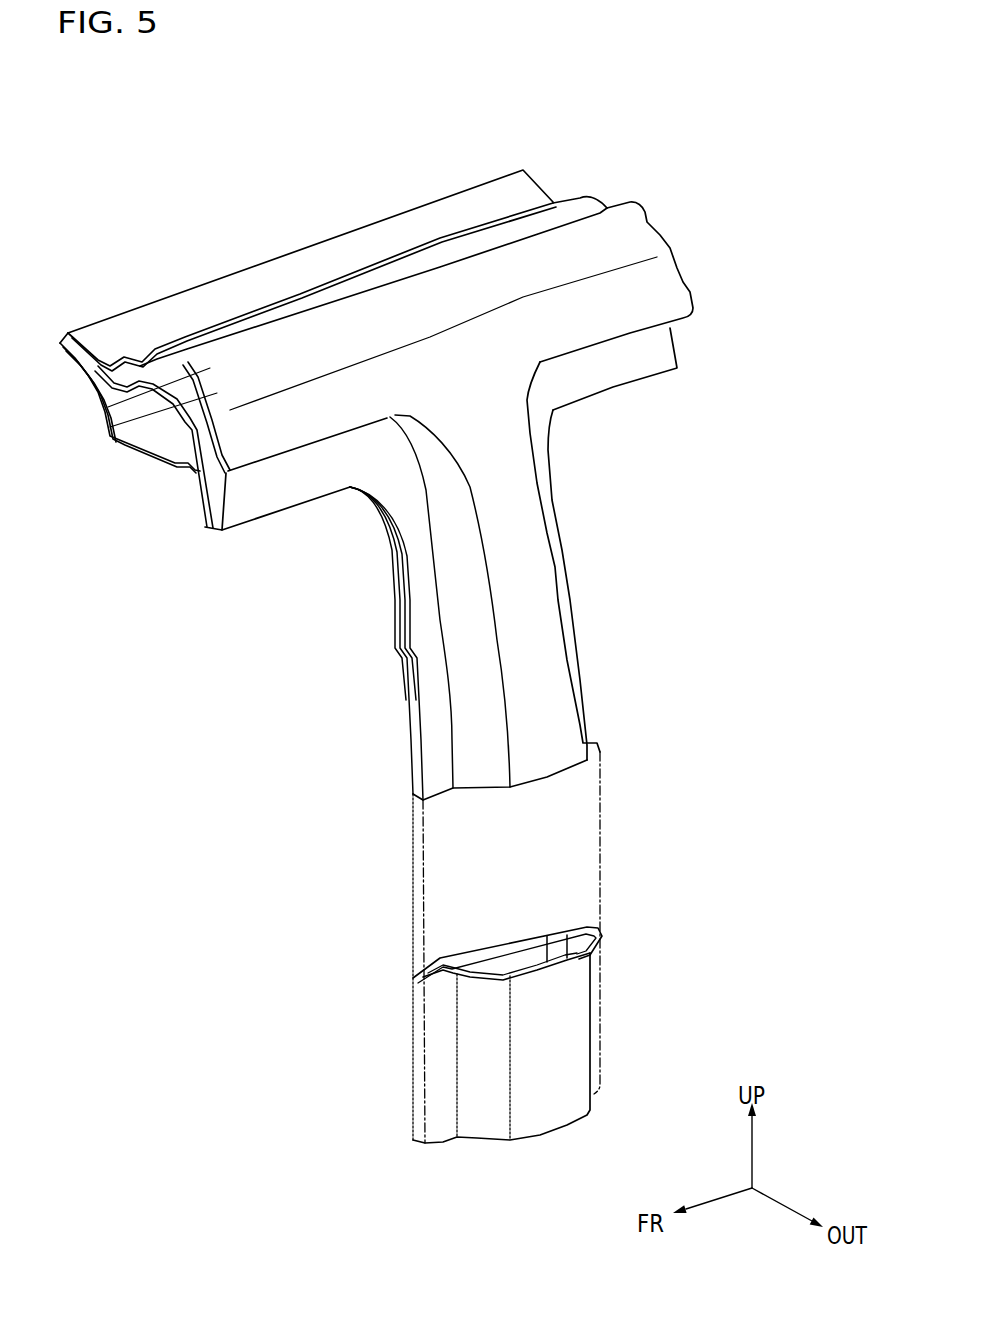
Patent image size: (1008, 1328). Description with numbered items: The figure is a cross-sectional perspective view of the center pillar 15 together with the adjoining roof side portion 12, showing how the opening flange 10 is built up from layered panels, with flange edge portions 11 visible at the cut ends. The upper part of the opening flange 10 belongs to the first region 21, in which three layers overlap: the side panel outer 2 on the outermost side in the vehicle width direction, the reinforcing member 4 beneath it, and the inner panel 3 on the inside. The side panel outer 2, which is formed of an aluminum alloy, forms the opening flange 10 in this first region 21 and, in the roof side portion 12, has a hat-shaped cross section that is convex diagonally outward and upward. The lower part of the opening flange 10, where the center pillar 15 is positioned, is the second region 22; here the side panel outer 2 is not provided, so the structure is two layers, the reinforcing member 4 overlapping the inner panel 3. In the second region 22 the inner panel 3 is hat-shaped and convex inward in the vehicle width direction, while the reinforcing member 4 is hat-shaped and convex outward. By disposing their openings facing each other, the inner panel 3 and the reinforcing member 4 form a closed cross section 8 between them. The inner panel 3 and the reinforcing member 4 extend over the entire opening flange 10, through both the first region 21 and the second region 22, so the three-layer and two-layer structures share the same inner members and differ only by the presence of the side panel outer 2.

The opening flange 10 is at (491, 159).
The side panel outer 2 is at (262, 370).
The roof side portion 12 is at (362, 325).
The flange 11 is at (290, 507).
The first region 21 is at (588, 510).
The second region 22 is at (628, 1054).
The inner panel 3 is at (173, 463).
The reinforcing member 4 is at (150, 395).
The closed cross section 8 is at (127, 402).
The center pillar 15 is at (535, 683).